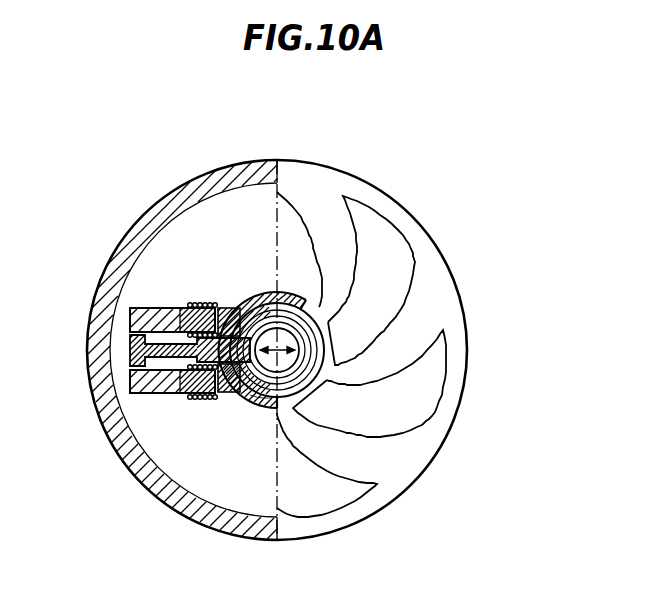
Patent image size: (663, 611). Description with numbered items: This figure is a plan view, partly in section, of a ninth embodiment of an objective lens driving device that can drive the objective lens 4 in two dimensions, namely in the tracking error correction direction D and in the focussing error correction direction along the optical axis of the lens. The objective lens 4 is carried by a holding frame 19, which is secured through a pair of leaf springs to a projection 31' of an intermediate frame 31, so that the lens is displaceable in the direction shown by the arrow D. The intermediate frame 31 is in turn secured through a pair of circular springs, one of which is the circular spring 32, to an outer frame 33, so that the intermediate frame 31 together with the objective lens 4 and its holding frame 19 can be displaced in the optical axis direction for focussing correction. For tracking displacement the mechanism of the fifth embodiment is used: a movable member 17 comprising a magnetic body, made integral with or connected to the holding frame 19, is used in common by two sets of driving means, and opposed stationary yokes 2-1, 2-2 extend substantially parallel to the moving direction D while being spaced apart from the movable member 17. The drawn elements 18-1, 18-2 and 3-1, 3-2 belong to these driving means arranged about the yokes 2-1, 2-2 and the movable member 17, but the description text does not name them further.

The intermediate frame 31 is at (317, 394).
The projection of the intermediate frame 31' is at (341, 265).
The circular spring 32 is at (340, 185).
The outer frame 33 is at (180, 513).
The holding frame 19 is at (253, 300).
The objective lens 4 is at (289, 302).
The tracking error correction direction D is at (248, 413).
The movable member 17 is at (130, 350).
The stationary yoke 2-1 is at (182, 308).
The stationary yoke 2-2 is at (190, 396).
The coil 18-1 is at (135, 306).
The coil 18-2 is at (140, 392).
The bearing holder 3-1 is at (198, 303).
The bearing holder 3-2 is at (204, 398).